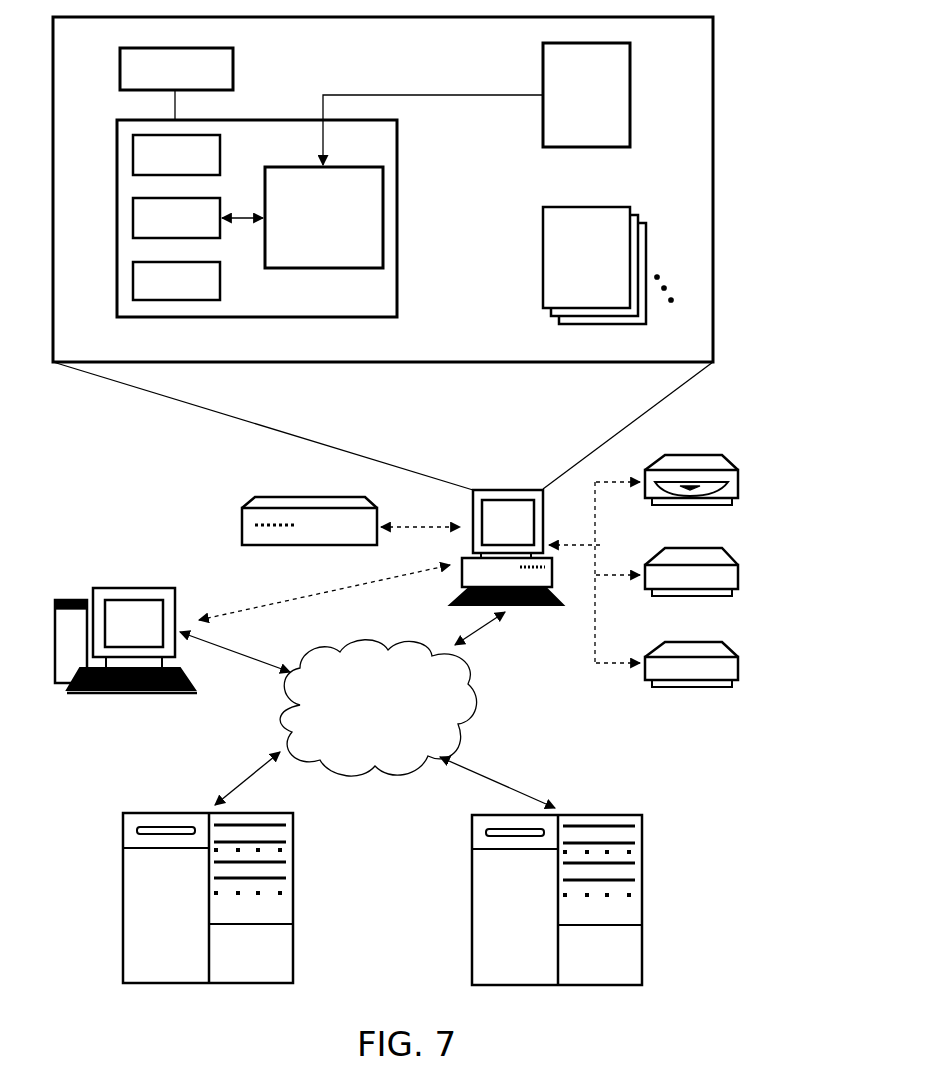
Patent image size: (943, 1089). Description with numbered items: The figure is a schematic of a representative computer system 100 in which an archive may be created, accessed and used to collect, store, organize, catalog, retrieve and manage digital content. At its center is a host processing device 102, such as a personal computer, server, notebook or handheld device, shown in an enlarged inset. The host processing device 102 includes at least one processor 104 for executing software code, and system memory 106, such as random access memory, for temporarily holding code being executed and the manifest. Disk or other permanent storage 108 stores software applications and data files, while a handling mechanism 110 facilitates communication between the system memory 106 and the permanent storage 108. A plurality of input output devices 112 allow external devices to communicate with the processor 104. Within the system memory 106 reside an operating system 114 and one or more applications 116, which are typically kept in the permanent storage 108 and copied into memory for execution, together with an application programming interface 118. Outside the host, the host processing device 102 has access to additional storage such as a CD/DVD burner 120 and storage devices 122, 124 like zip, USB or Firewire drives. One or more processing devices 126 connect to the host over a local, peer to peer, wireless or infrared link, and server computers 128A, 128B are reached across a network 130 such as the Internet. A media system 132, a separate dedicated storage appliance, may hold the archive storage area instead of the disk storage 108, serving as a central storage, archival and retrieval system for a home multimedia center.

The computer system 100 is at (112, 439).
The host processing device 102 is at (474, 490).
The processor 104 is at (120, 72).
The system memory 106 is at (268, 119).
The permanent storage 108 is at (632, 74).
The handling mechanism 110 is at (385, 210).
The input output devices 112 is at (632, 208).
The operating system 114 is at (133, 159).
The applications 116 is at (133, 222).
The application programming interface 118 is at (133, 286).
The CD/DVD burner 120 is at (738, 497).
The storage device 122 is at (738, 588).
The storage device 124 is at (738, 680).
The processing device 126 is at (136, 586).
The server computer 128A is at (295, 822).
The server computer 128B is at (644, 840).
The network 130 is at (385, 710).
The media system 132 is at (240, 523).